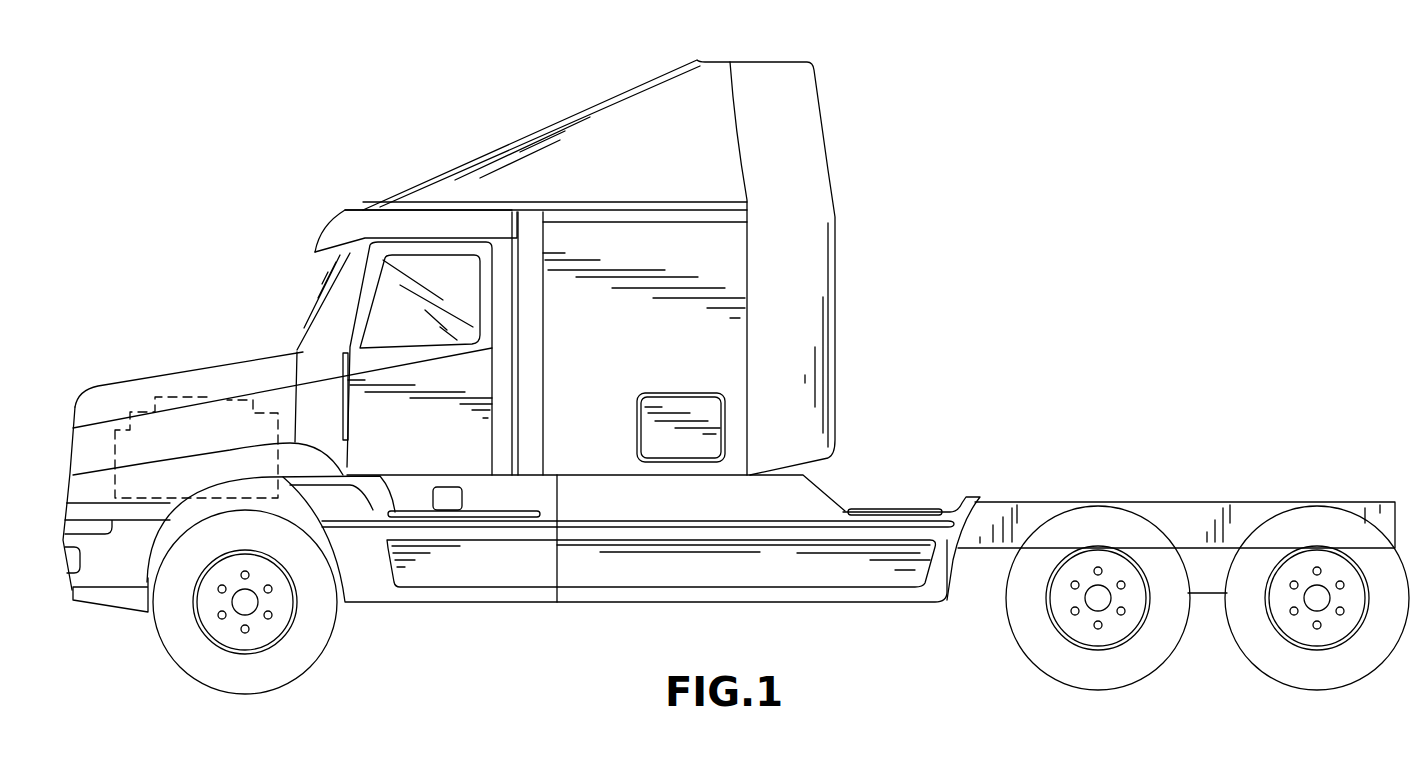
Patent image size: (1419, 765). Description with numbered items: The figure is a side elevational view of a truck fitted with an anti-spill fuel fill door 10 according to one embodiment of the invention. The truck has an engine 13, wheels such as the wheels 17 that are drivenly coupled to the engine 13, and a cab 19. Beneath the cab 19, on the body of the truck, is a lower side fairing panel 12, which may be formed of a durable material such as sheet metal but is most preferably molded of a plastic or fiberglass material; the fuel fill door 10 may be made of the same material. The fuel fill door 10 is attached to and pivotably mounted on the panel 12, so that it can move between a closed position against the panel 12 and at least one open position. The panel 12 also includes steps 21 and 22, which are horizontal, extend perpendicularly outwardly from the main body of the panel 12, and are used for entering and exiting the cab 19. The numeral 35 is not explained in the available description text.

The truck tractor cab 35 is at (296, 284).
The cab 19 is at (428, 273).
The engine 13 is at (183, 400).
The step 21 is at (412, 508).
The fuel fill door 10 is at (447, 497).
The step 22 is at (470, 583).
The lower side fairing panel 12 is at (638, 596).
The wheels 17 is at (1270, 677).